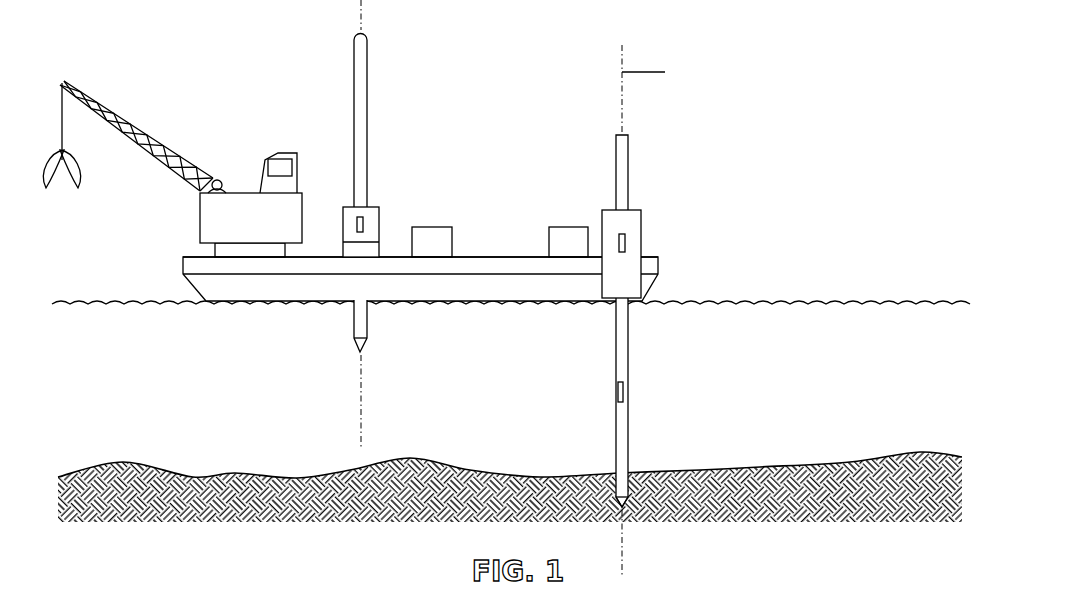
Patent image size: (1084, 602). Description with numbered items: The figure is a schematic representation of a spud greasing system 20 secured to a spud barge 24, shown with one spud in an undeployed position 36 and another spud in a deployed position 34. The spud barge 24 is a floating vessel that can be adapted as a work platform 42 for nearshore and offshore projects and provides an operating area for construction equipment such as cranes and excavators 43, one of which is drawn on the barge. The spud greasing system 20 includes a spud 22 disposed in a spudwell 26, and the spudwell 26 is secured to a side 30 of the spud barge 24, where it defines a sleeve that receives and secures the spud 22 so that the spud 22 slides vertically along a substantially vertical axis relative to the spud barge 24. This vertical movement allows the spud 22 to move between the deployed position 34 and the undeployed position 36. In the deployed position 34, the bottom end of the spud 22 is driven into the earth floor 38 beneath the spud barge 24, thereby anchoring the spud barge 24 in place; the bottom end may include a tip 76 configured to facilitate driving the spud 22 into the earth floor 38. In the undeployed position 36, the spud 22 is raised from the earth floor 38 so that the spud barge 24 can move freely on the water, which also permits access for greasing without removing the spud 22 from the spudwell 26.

The spud greasing system 20 is at (521, 287).
The spud 22 is at (504, 258).
The spud barge 24 is at (378, 277).
The spudwell 26 is at (354, 210).
The side 30 is at (290, 265).
The deployed position 34 is at (631, 452).
The undeployed position 36 is at (370, 331).
The earth floor 38 is at (722, 498).
The work platform 42 is at (498, 250).
The excavator 43 is at (248, 192).
The tip 76 is at (617, 497).